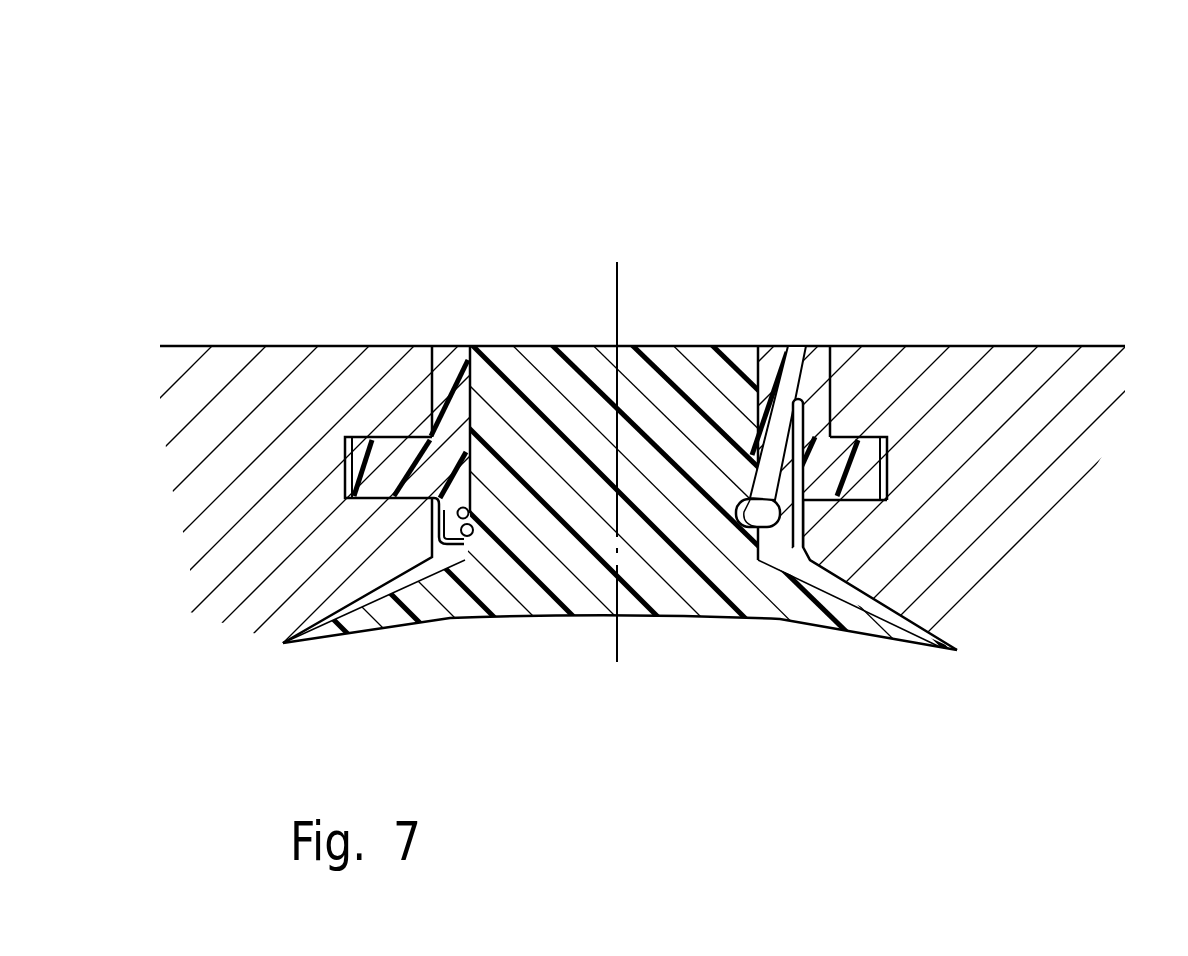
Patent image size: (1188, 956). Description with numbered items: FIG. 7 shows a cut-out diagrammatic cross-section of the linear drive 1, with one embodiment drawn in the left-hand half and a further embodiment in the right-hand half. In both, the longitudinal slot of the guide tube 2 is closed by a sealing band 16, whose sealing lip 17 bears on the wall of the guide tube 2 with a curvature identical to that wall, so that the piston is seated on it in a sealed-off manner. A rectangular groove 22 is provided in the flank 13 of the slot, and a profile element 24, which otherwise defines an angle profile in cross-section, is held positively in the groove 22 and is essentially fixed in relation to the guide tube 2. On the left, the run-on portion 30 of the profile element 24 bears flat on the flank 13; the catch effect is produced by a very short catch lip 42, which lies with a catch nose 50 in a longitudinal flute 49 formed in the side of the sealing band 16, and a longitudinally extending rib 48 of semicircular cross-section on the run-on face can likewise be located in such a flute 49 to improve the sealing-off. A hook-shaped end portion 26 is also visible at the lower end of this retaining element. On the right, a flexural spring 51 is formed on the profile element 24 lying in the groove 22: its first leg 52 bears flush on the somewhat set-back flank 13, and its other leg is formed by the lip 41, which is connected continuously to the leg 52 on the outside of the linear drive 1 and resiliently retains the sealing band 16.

The linear drive 1 is at (412, 133).
The guide tube 2 is at (199, 531).
The flank 13 is at (425, 391).
The sealing band 16 is at (592, 600).
The sealing lip 17 is at (836, 625).
The groove 22 is at (340, 463).
The profile element 24 is at (480, 420).
The clip hook 26 is at (346, 499).
The run-on portion 30 is at (452, 350).
The lip 41 is at (757, 428).
The catch lip 42 is at (448, 560).
The rib 48 is at (740, 528).
The longitudinal flute 49 is at (473, 522).
The catch nose 50 is at (468, 512).
The flexural spring 51 is at (805, 355).
The first leg 52 is at (835, 384).